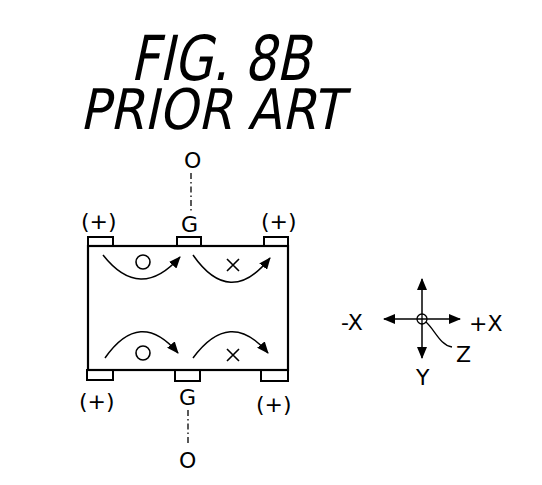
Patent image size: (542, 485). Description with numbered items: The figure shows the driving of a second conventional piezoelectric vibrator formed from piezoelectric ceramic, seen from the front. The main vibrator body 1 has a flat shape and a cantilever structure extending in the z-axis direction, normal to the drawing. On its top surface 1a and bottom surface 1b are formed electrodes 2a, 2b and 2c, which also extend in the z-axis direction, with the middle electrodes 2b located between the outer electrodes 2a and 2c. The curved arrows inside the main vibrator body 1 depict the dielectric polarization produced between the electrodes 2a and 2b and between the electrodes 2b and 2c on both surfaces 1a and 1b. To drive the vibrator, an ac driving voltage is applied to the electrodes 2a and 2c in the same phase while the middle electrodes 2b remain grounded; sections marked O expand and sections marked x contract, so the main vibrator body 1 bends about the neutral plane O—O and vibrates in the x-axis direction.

The main vibrator body 1 is at (289, 273).
The top surface 1a is at (222, 244).
The bottom surface 1b is at (138, 372).
The electrodes 2a is at (114, 240).
The middle electrodes 2b is at (174, 239).
The electrodes 2c is at (264, 238).